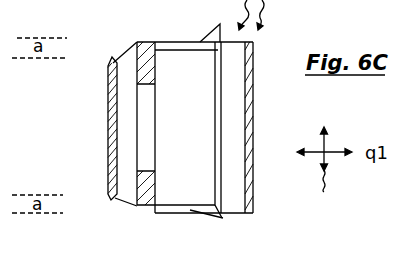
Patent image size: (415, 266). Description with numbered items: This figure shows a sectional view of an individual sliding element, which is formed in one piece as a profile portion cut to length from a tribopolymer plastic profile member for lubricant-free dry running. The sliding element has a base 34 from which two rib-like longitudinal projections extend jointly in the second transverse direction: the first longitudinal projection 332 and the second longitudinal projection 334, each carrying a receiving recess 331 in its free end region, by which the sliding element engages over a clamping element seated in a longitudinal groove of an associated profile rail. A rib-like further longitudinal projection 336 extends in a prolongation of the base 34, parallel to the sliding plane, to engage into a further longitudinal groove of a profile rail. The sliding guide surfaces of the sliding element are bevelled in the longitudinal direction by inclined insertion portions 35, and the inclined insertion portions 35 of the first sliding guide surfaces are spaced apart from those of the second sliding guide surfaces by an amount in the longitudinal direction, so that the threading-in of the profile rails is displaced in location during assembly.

The base 34 is at (186, 106).
The inclined insertion portion 35 is at (117, 63).
The receiving recess 331 is at (143, 131).
The first longitudinal projection 332 is at (140, 205).
The second longitudinal projection 334 is at (110, 194).
The further longitudinal projection 336 is at (251, 204).